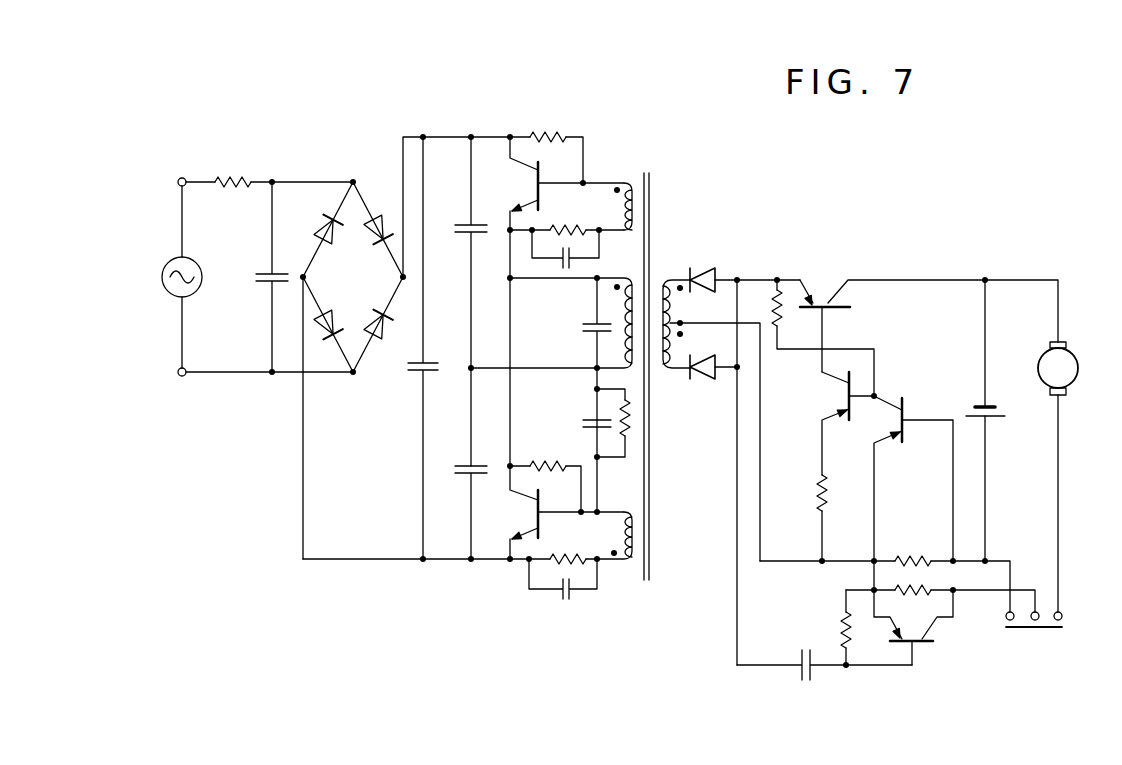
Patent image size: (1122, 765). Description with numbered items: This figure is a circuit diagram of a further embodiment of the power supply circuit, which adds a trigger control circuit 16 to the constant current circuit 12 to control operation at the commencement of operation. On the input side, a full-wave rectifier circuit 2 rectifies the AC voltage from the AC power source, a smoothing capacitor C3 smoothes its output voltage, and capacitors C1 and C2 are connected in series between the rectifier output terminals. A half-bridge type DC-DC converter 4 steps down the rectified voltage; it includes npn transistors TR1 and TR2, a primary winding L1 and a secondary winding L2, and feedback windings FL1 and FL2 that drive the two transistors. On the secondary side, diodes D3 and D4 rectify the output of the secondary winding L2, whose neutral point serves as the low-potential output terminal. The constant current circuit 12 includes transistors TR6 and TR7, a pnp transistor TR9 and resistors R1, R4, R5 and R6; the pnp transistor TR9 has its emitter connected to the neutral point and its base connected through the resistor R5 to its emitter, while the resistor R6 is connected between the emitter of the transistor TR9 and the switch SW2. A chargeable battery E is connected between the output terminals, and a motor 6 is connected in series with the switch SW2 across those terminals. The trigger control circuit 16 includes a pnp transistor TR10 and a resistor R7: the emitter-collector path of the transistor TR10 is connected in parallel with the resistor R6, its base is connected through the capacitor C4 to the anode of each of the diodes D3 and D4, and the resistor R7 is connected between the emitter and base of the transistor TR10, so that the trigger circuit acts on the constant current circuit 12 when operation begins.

The full-wave rectifier circuit 2 is at (330, 196).
The half-bridge type DC-DC converter 4 is at (660, 167).
The motor 6 is at (1080, 368).
The constant current circuit 12 is at (892, 301).
The trigger control circuit 16 is at (827, 627).
The capacitor C1 is at (458, 236).
The capacitor C2 is at (454, 472).
The smoothing capacitor C3 is at (408, 374).
The capacitor C4 is at (806, 683).
The npn transistor TR1 is at (534, 190).
The npn transistor TR2 is at (528, 518).
The transistor TR6 is at (848, 298).
The transistor TR7 is at (844, 404).
The pnp transistor TR9 is at (894, 398).
The pnp transistor TR10 is at (937, 636).
The feedback winding FL1 is at (636, 178).
The feedback winding FL2 is at (622, 568).
The primary winding L1 is at (608, 302).
The secondary winding L2 is at (670, 370).
The diode D3 is at (701, 270).
The diode D4 is at (702, 382).
The resistor R1 is at (777, 306).
The resistor R4 is at (820, 494).
The resistor R5 is at (912, 560).
The resistor R6 is at (912, 596).
The resistor R7 is at (843, 630).
The chargeable battery E is at (1000, 414).
The switch SW2 is at (1035, 630).